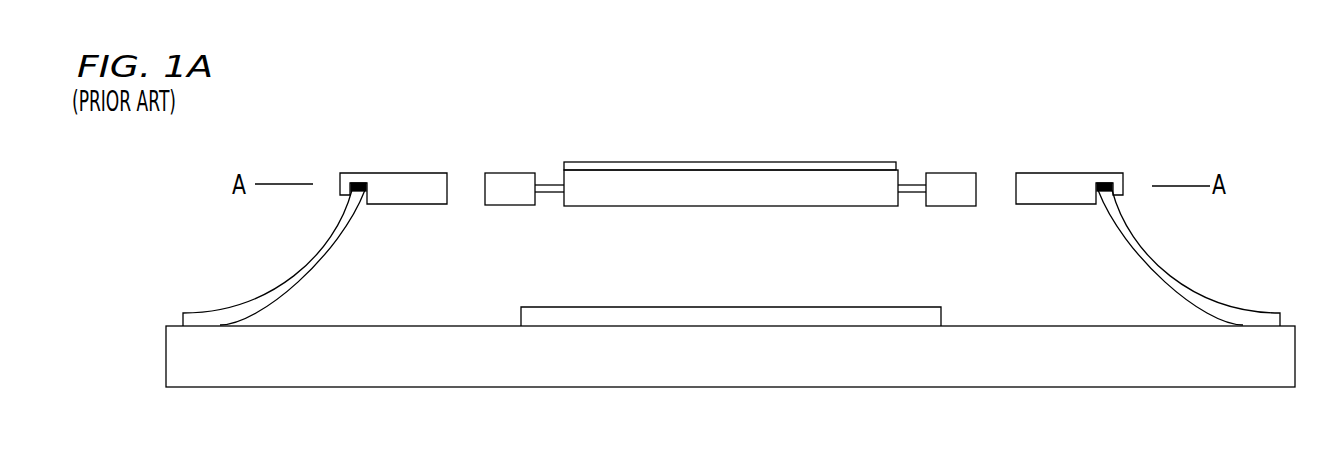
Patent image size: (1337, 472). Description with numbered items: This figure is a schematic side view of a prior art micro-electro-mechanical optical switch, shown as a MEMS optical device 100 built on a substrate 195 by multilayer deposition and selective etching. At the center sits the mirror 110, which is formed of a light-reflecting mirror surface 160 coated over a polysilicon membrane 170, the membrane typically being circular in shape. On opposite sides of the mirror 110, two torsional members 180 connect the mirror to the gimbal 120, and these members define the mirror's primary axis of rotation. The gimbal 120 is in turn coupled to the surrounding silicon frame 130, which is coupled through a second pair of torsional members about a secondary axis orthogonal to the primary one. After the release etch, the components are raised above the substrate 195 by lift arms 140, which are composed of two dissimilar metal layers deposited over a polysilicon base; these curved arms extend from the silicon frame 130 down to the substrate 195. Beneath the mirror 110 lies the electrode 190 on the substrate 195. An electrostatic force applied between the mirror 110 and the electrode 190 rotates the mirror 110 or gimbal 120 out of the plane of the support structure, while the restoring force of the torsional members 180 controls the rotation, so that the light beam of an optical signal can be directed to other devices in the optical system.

The MEMS optical device 100 is at (731, 197).
The mirror 110 is at (731, 165).
The gimbal 120 is at (950, 197).
The silicon frame 130 is at (1105, 172).
The lift arms 140 is at (1153, 276).
The mirror surface 160 is at (650, 165).
The polysilicon membrane 170 is at (728, 197).
The torsional members 180 is at (550, 184).
The electrode 190 is at (568, 307).
The substrate 195 is at (408, 371).